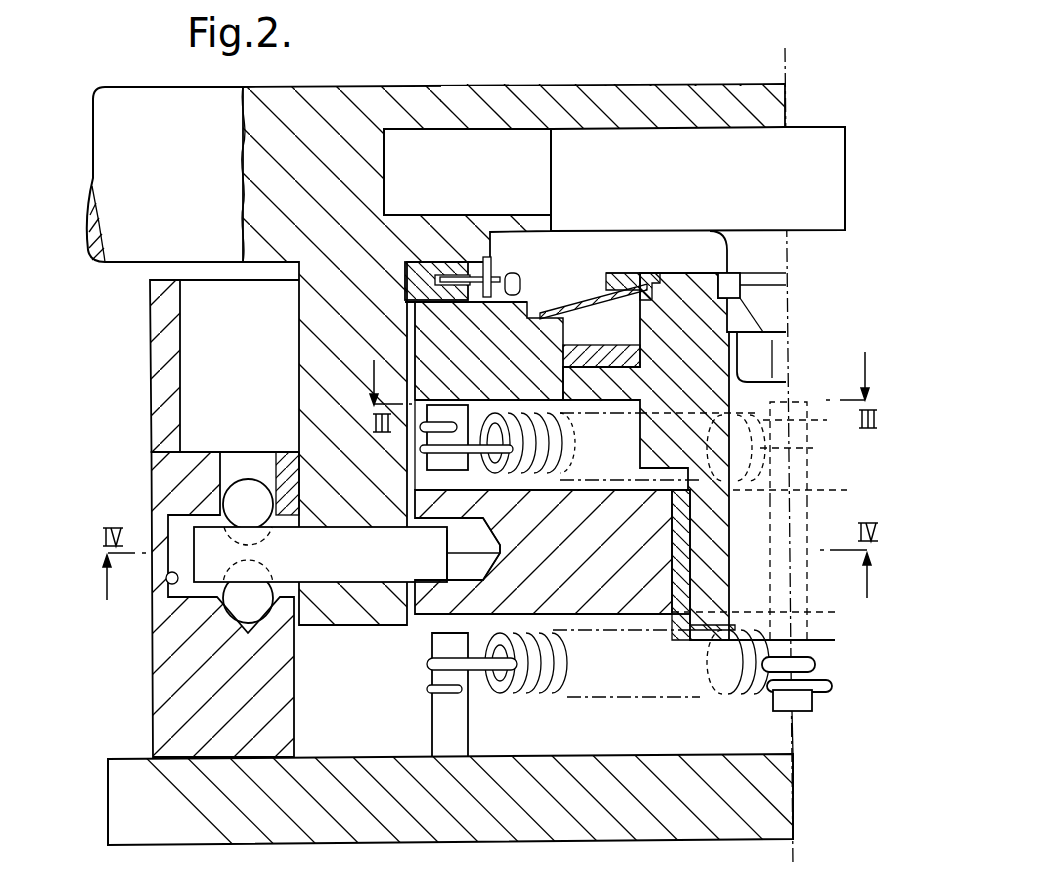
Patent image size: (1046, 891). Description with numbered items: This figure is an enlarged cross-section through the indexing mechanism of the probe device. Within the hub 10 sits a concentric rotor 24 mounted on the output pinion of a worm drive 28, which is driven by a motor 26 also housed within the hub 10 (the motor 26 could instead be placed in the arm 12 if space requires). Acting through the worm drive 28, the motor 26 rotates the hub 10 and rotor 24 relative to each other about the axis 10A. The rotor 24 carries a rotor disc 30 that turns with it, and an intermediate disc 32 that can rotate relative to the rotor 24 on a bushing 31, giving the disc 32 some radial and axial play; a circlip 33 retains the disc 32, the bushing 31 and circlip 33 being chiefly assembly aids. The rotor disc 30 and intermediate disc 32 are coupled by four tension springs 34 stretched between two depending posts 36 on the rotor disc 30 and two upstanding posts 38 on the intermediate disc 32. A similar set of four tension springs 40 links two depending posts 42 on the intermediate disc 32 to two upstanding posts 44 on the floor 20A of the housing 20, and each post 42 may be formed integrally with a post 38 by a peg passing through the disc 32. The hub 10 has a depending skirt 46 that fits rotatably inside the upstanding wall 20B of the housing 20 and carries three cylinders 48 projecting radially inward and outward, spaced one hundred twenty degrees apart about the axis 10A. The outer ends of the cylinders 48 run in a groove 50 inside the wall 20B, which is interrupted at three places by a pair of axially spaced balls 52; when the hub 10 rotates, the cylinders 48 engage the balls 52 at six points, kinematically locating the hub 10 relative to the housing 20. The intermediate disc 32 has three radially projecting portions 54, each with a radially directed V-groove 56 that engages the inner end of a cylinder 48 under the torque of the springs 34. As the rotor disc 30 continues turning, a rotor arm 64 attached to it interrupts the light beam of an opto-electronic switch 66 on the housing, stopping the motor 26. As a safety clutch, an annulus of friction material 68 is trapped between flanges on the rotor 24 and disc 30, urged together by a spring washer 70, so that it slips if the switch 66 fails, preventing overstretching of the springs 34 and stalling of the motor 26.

The hub 10 is at (565, 78).
The axis 10A is at (783, 61).
The arm 12 is at (133, 240).
The housing 20 is at (140, 731).
The floor of the housing 20A is at (765, 805).
The upstanding wall of the housing 20B is at (167, 662).
The rotor 24 is at (707, 362).
The motor 26 is at (453, 140).
The worm drive 28 is at (660, 145).
The rotor disc 30 is at (550, 338).
The bushing 31 is at (683, 580).
The intermediate disc 32 is at (613, 597).
The circlip 33 is at (687, 628).
The tension springs 34 is at (513, 447).
The depending posts 36 is at (410, 460).
The upstanding posts 38 is at (800, 470).
The tension springs 40 is at (557, 690).
The depending posts 42 is at (813, 703).
The upstanding posts 44 is at (440, 725).
The depending skirt 46 is at (320, 330).
The cylinders 48 is at (348, 557).
The groove 50 is at (178, 585).
The balls 52 is at (250, 500).
The radially projecting portions 54 is at (420, 625).
The V-groove 56 is at (467, 565).
The rotor arm 64 is at (486, 270).
The opto-electronic switch 66 is at (420, 273).
The annulus of friction material 68 is at (617, 352).
The spring washer 70 is at (583, 310).